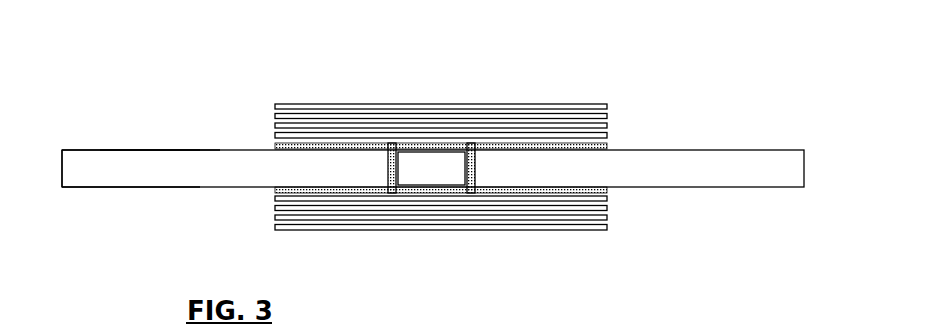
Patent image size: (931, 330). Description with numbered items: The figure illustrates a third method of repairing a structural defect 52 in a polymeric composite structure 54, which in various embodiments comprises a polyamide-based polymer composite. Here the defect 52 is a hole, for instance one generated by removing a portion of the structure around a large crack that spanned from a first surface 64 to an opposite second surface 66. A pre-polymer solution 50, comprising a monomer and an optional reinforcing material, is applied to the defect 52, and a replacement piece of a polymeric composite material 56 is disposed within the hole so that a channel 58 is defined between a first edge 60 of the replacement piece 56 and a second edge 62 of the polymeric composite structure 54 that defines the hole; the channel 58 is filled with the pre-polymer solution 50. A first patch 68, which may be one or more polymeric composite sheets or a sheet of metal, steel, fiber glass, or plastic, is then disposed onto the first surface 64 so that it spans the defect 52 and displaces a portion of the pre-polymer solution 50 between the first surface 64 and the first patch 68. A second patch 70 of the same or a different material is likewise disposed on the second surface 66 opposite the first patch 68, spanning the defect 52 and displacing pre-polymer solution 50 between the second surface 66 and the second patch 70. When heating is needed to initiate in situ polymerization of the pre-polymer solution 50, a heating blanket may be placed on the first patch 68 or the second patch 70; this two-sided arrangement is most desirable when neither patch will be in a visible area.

The pre-polymer solution 50 is at (390, 130).
The defect 52 is at (457, 191).
The polymeric composite structure 54 is at (753, 188).
The replacement piece of a polymeric composite material 56 is at (415, 160).
The channel 58 is at (319, 132).
The first edge 60 is at (478, 150).
The second edge 62 is at (387, 178).
The first surface 64 is at (102, 188).
The second surface 66 is at (148, 149).
The first patch 68 is at (609, 197).
The second patch 70 is at (610, 136).